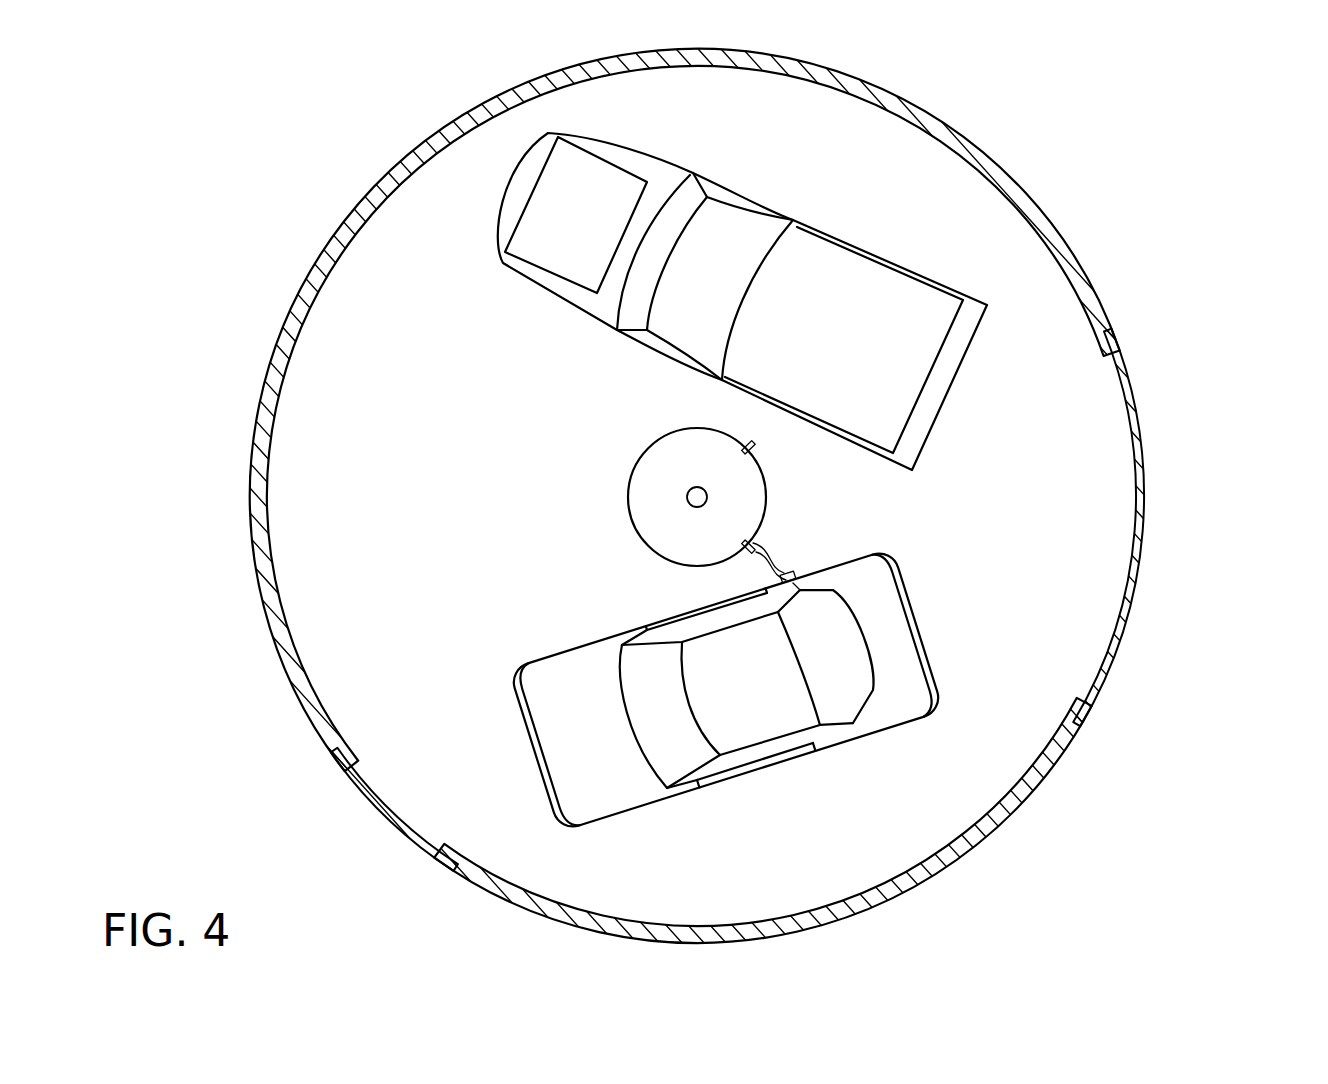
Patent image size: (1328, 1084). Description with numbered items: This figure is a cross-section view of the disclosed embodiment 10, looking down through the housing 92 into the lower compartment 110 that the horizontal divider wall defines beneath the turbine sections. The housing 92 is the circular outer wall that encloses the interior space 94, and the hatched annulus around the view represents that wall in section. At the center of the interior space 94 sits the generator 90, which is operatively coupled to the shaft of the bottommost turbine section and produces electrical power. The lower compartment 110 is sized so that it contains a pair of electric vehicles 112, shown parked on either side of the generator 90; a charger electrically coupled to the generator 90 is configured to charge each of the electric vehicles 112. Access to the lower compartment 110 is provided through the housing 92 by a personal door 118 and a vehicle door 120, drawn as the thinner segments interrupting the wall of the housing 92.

The vehicle turntable system 10 is at (1092, 125).
The generator 90 is at (660, 470).
The housing 92 is at (1108, 282).
The interior space 94 is at (335, 532).
The lower compartment 110 is at (1002, 722).
The electric vehicles 112 is at (943, 377).
The personal door 118 is at (383, 813).
The vehicle door 120 is at (1141, 498).